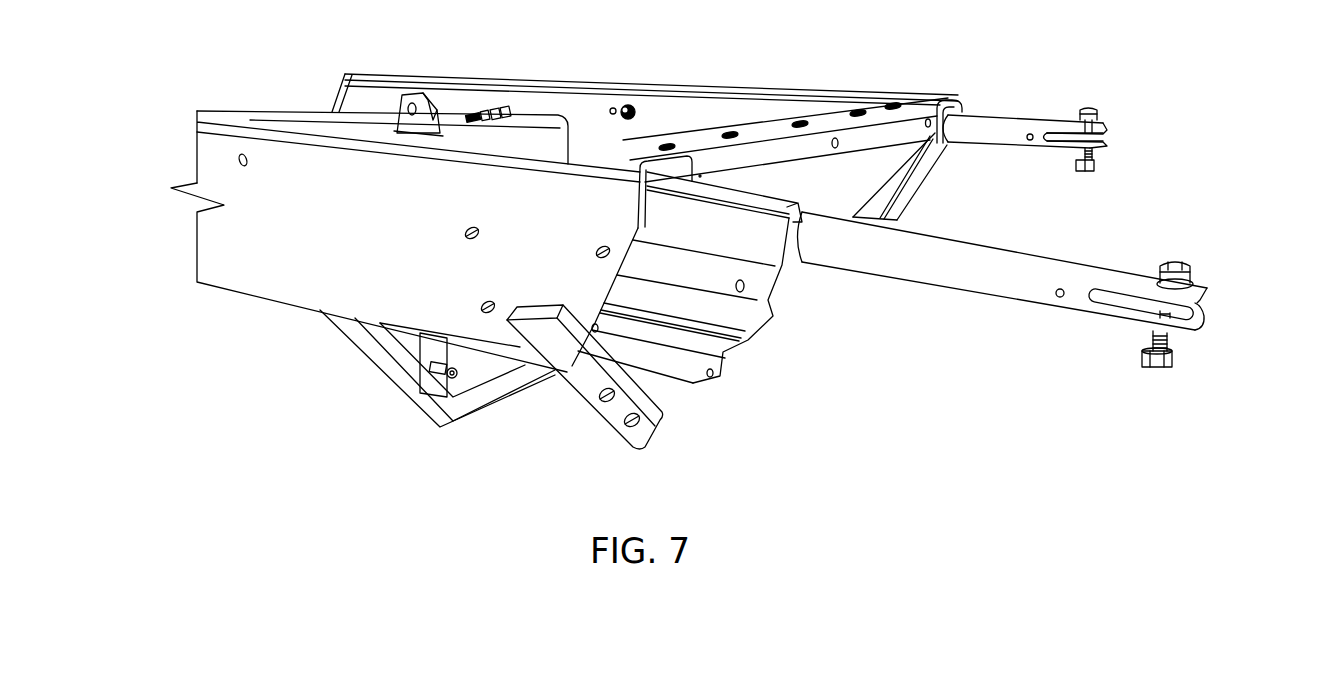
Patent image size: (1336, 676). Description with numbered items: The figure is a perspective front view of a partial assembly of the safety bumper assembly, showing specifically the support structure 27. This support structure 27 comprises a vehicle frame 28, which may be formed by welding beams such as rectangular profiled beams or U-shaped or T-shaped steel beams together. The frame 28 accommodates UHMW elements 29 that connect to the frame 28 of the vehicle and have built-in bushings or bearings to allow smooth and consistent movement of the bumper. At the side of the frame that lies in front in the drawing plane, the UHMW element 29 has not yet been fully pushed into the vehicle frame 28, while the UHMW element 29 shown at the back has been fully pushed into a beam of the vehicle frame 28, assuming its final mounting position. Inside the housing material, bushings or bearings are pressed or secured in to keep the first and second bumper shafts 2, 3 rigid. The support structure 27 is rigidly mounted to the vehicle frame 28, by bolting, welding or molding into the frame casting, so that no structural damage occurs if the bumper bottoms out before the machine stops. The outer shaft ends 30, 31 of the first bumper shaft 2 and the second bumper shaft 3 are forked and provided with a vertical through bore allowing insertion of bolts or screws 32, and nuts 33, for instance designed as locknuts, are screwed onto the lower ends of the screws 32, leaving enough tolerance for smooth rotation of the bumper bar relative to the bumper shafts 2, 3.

The first bumper shaft 2 is at (993, 128).
The second bumper shaft 3 is at (1005, 287).
The support structure 27 is at (345, 382).
The vehicle frame 28 is at (334, 267).
The UHMW element 29 is at (663, 350).
The outer shaft end 30 is at (1122, 135).
The outer shaft end 31 is at (1208, 312).
The screw 32 is at (1095, 156).
The nut 33 is at (1078, 167).